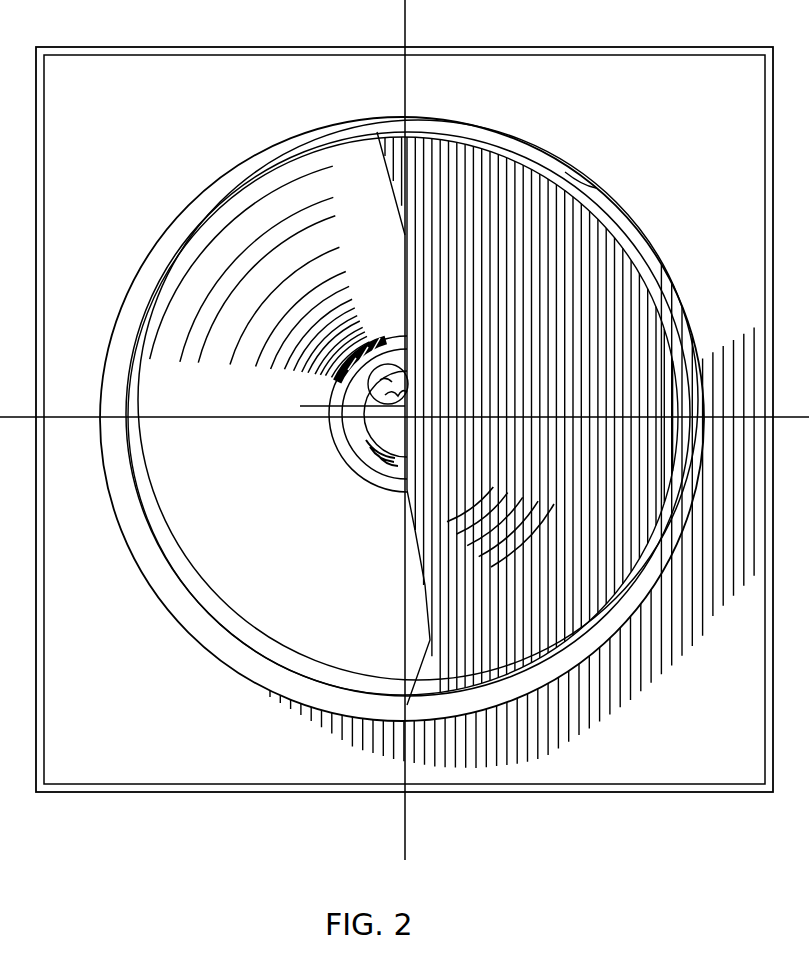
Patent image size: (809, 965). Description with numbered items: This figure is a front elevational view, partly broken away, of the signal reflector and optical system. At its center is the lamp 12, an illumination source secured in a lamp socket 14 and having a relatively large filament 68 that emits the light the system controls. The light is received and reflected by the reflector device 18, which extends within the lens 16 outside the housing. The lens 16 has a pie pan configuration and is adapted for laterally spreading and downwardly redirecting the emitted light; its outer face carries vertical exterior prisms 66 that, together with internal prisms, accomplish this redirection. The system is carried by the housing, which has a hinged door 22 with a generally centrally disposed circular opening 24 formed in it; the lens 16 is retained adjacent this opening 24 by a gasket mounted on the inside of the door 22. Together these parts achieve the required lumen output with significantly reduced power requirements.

The lamp 12 is at (374, 470).
The lamp socket 14 is at (373, 347).
The lens 16 is at (447, 578).
The reflector device 18 is at (251, 352).
The hinged door 22 is at (610, 78).
The circular opening 24 is at (590, 190).
The vertical exterior prisms 66 is at (600, 246).
The filament 68 is at (386, 392).